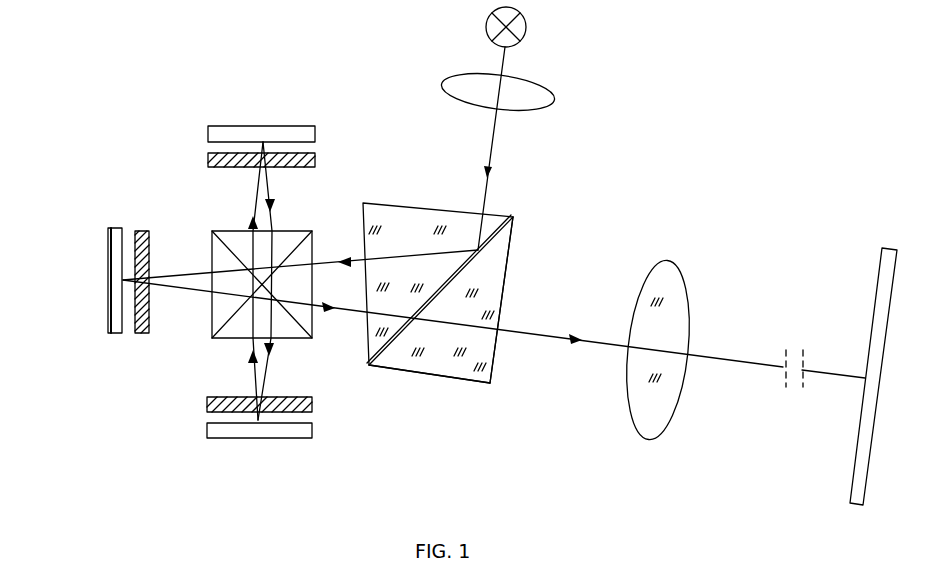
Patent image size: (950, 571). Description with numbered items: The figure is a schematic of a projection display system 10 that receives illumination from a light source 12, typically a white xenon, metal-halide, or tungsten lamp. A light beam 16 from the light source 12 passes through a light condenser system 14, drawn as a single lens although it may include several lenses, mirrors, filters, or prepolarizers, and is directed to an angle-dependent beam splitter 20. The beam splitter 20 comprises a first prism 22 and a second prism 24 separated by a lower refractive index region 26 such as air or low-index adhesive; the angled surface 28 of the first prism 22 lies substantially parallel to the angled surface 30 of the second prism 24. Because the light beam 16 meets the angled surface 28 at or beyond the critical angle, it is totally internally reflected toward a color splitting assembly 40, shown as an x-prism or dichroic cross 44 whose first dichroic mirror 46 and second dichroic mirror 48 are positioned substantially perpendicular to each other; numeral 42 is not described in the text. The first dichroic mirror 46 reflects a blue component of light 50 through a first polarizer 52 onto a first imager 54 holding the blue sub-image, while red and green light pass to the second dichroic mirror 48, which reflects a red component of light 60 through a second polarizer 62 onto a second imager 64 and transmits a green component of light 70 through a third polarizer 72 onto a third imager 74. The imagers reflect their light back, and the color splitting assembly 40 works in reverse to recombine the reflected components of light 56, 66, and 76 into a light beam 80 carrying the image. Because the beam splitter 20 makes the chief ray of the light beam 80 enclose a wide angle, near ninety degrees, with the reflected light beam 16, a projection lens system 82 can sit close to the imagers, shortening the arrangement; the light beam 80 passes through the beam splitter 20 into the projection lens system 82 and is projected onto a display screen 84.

The projection display system 10 is at (630, 54).
The light source 12 is at (522, 28).
The light condenser system 14 is at (542, 96).
The light beam 16 is at (492, 152).
The angle-dependent beam splitter 20 is at (473, 282).
The first prism 22 is at (420, 215).
The second prism 24 is at (497, 270).
The lower refractive index region 26 is at (369, 366).
The angled surface 28 is at (418, 307).
The angled surface 30 is at (437, 308).
The color splitting assembly 40 is at (241, 327).
The cube face 42 is at (203, 356).
The dichroic cross 44 is at (292, 333).
The first dichroic mirror 46 is at (295, 245).
The second dichroic mirror 48 is at (225, 240).
The blue component of light 50 is at (268, 375).
The first polarizer 52 is at (312, 405).
The first imager 54 is at (312, 430).
The reflected component of light 56 is at (253, 360).
The red component of light 60 is at (252, 217).
The second polarizer 62 is at (208, 160).
The second imager 64 is at (208, 133).
The reflected component of light 66 is at (270, 200).
The green component of light 70 is at (193, 273).
The third polarizer 72 is at (145, 333).
The third imager 74 is at (108, 232).
The reflected component of light 76 is at (193, 289).
The light beam 80 is at (530, 336).
The projection lens system 82 is at (653, 418).
The display screen 84 is at (858, 490).